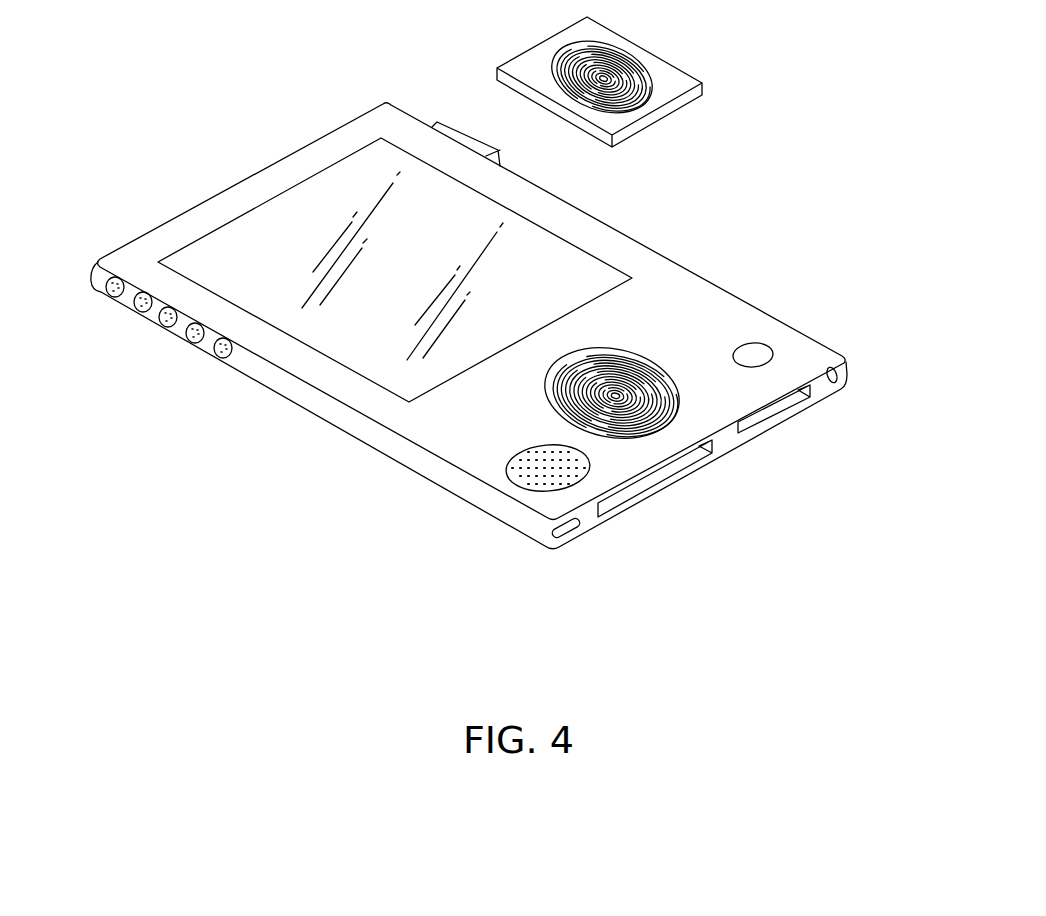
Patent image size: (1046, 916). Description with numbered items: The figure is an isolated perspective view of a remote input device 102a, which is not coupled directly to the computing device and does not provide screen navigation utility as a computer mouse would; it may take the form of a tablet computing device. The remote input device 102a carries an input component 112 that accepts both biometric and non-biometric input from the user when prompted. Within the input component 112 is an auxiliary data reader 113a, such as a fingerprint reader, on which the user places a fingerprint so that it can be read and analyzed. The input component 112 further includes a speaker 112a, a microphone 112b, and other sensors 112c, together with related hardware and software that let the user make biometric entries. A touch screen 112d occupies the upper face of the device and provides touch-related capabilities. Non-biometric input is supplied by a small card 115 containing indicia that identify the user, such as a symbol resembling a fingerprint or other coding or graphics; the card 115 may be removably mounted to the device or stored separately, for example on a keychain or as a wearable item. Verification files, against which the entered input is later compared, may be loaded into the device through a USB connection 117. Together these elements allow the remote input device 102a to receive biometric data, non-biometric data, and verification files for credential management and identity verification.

The remote input device 102a is at (276, 124).
The speaker 112a is at (523, 482).
The microphone 112b is at (762, 348).
The other sensors 112c is at (158, 346).
The touch screen 112d is at (572, 257).
The auxiliary data reader 113a is at (630, 360).
The small card 115 is at (687, 82).
The USB connection 117 is at (780, 412).
The input component 112 is at (703, 479).